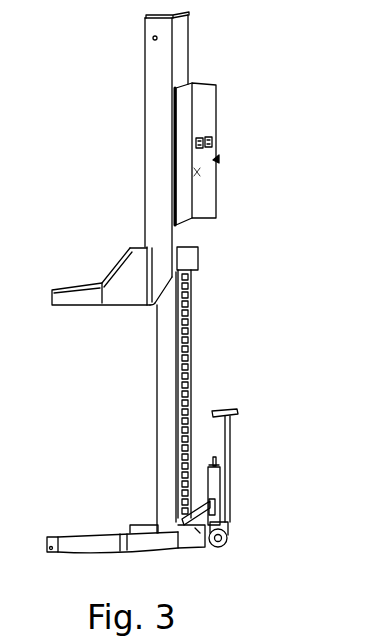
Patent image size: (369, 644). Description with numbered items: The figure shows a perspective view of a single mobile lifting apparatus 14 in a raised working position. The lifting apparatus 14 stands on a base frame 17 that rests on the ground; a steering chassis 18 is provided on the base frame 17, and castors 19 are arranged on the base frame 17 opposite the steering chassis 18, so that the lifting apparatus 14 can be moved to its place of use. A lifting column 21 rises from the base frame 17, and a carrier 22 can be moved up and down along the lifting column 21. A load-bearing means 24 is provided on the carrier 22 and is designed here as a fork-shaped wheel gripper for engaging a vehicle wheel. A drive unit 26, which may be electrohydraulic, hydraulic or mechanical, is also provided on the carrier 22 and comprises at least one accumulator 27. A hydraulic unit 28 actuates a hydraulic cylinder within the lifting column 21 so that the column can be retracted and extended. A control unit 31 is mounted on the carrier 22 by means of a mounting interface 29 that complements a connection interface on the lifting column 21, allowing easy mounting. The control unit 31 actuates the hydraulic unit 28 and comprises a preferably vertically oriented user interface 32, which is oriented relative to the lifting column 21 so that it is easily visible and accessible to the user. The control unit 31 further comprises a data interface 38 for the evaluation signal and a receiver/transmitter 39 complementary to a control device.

The lifting apparatus 14 is at (222, 257).
The base frame 17 is at (62, 537).
The steering chassis 18 is at (238, 523).
The castors 19 is at (55, 556).
The lifting column 21 is at (205, 65).
The carrier 22 is at (180, 43).
The load-bearing means 24 is at (65, 301).
The drive unit 26 is at (113, 236).
The accumulator 27 is at (208, 100).
The hydraulic unit 28 is at (208, 203).
The mounting interface 29 is at (177, 127).
The control unit 31 is at (193, 173).
The user interface 32 is at (216, 160).
The data interface 38 is at (197, 140).
The receiver/transmitter 39 is at (213, 143).